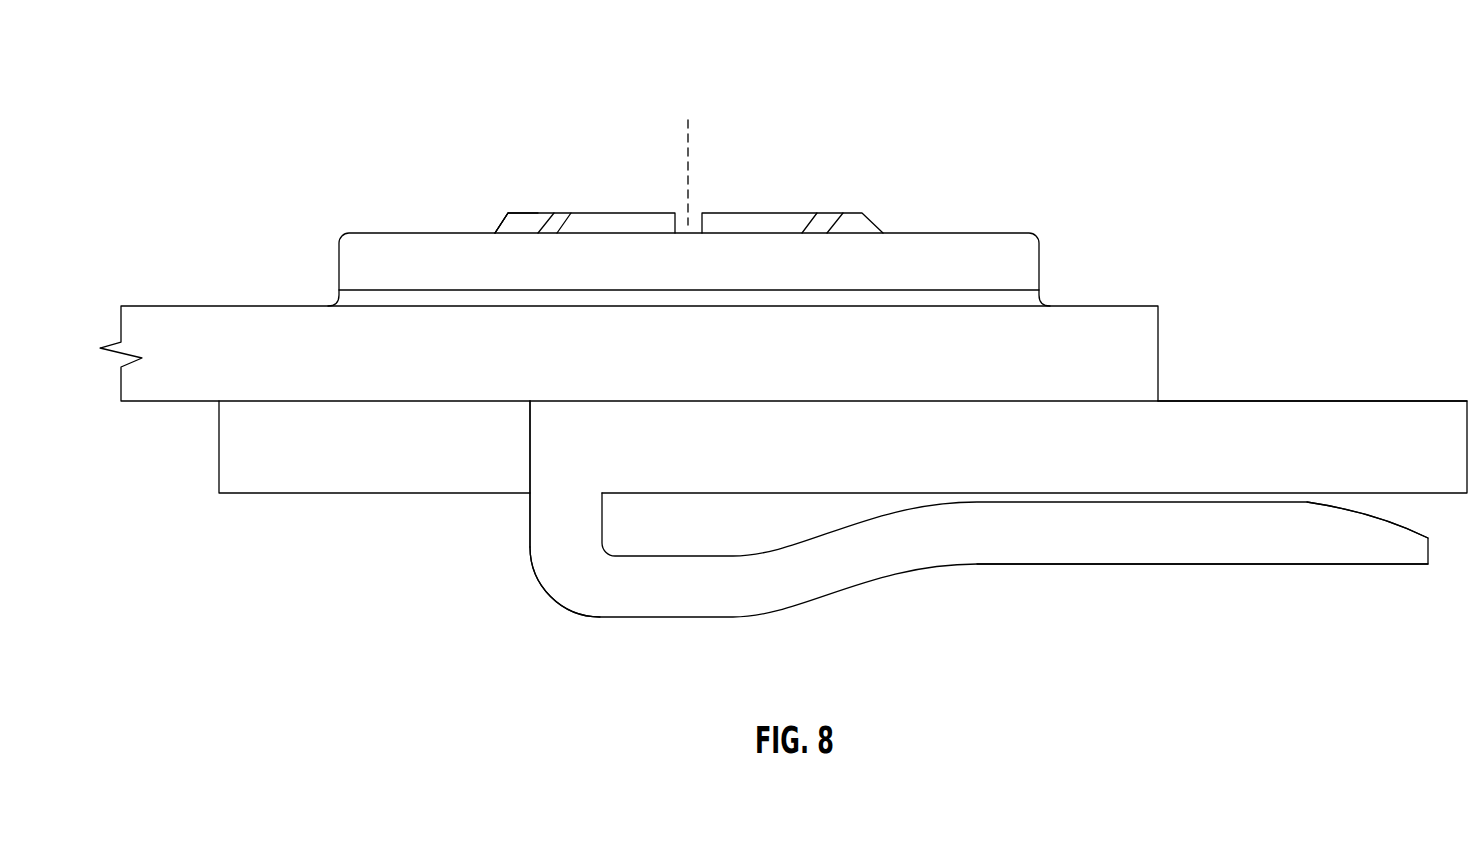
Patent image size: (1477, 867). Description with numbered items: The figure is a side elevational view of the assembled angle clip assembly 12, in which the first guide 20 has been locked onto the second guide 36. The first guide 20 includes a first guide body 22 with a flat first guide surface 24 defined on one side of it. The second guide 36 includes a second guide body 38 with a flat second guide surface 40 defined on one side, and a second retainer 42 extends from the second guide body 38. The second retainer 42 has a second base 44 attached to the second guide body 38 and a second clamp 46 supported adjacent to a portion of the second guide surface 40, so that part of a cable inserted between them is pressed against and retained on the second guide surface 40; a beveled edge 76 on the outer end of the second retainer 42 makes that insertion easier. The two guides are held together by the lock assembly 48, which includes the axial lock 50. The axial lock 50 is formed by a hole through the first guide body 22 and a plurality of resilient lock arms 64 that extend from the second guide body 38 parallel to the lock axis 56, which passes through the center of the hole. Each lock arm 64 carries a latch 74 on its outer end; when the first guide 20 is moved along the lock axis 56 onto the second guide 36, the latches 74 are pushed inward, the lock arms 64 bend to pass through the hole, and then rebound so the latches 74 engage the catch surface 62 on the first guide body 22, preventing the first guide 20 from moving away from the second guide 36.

The angle clip assembly 12 is at (1256, 122).
The first guide 20 is at (220, 306).
The first guide body 22 is at (198, 390).
The first guide surface 24 is at (258, 306).
The second guide 36 is at (1363, 401).
The second guide body 38 is at (1232, 401).
The second guide surface 40 is at (770, 493).
The second retainer 42 is at (552, 600).
The second base 44 is at (537, 527).
The second clamp 46 is at (1310, 565).
The lock assembly 48 is at (1006, 161).
The axial lock 50 is at (897, 177).
The lock axis 56 is at (690, 152).
The catch surface 62 is at (508, 225).
The lock arms 64 is at (644, 213).
The latch 74 is at (510, 215).
The beveled edge 76 is at (1407, 528).